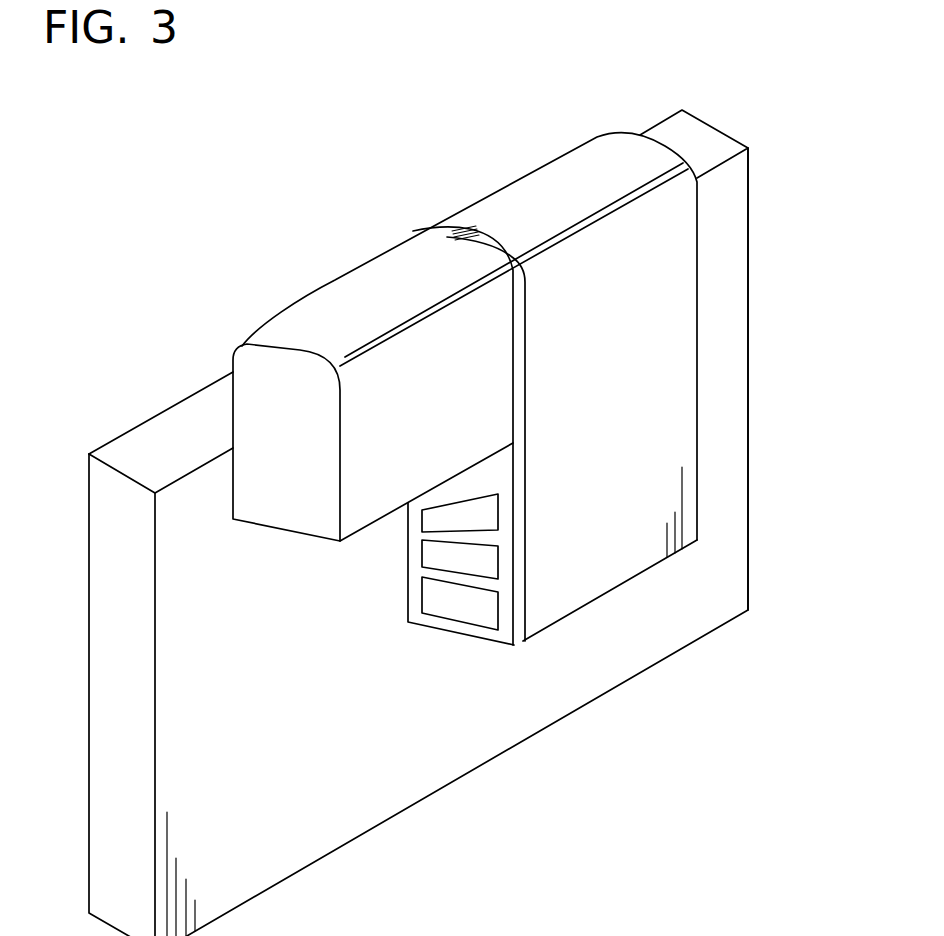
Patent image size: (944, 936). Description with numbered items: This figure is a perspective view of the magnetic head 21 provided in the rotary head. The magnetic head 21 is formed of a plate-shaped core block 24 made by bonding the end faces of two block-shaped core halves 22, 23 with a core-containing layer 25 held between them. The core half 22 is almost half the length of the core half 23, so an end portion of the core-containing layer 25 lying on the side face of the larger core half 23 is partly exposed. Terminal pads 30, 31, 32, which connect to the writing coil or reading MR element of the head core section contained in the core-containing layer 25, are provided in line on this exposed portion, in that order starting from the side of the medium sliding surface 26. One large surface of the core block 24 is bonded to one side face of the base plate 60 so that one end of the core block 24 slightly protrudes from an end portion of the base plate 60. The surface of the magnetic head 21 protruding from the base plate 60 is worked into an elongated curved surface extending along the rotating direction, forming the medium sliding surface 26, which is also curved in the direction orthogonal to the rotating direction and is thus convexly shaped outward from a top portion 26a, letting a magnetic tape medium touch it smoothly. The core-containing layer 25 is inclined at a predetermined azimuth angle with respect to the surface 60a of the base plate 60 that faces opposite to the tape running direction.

The magnetic head 21 is at (281, 219).
The core half 22 is at (261, 502).
The core half 23 is at (668, 395).
The core block 24 is at (712, 541).
The core-containing layer 25 is at (442, 230).
The medium sliding surface 26 is at (352, 297).
The top portion 26a is at (475, 216).
The terminal pad 30 is at (443, 510).
The terminal pad 31 is at (440, 552).
The terminal pad 32 is at (462, 612).
The base plate 60 is at (702, 137).
The surface of the base plate 60a is at (722, 245).